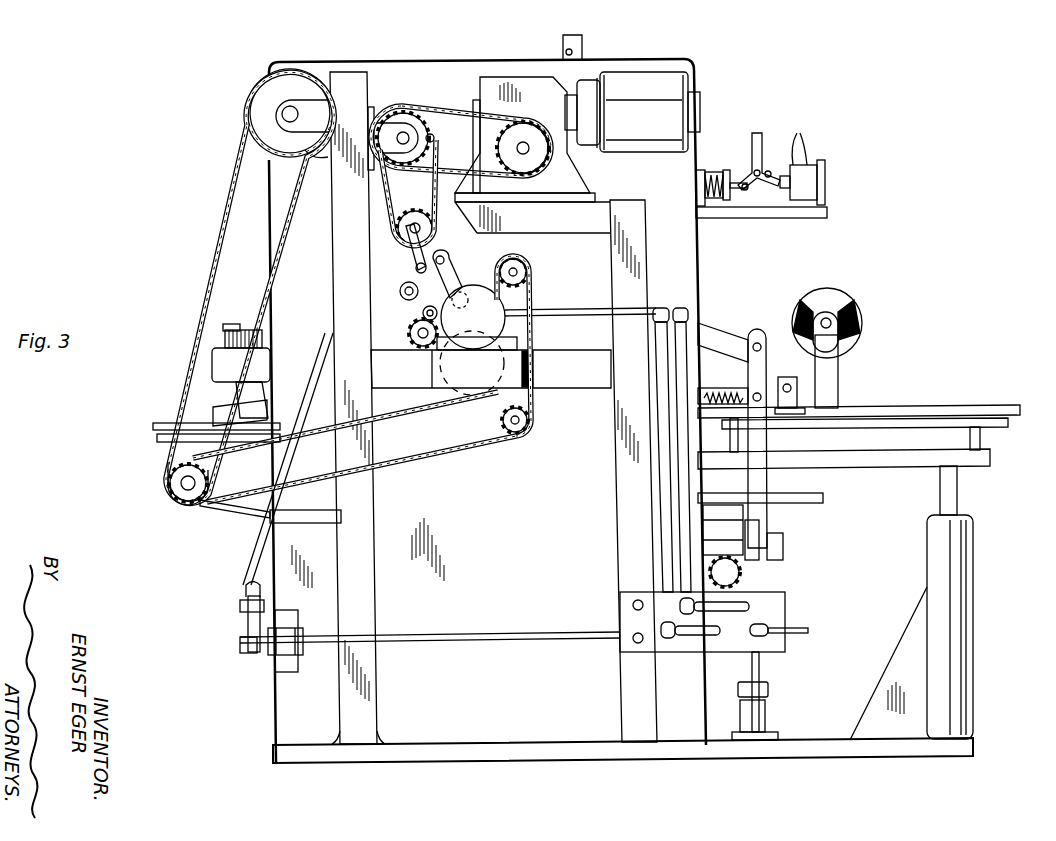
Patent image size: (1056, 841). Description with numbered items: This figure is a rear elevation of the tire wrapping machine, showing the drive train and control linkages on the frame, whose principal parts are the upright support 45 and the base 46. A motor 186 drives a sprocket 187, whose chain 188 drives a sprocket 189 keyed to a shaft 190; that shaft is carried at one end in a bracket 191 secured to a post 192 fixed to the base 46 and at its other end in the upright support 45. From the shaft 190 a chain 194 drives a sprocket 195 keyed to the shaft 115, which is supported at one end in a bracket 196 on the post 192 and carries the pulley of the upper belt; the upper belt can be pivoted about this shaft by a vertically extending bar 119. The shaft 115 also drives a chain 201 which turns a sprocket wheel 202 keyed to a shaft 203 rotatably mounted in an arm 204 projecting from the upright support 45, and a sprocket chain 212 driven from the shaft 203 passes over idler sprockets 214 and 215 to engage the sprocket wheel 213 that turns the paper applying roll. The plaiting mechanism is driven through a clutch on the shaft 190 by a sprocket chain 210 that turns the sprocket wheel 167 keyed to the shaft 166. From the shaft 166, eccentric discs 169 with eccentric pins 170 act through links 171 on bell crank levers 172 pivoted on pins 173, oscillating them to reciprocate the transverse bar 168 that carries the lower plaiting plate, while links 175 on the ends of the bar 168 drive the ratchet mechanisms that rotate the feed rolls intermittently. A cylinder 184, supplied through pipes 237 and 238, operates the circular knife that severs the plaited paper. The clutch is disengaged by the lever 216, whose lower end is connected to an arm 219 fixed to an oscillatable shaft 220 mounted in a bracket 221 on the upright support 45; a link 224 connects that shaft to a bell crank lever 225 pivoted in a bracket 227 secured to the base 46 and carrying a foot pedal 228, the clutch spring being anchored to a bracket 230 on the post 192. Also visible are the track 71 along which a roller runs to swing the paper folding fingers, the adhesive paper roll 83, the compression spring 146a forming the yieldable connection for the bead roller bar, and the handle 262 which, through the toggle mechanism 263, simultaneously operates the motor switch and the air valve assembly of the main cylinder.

The upright support 45 is at (485, 54).
The base 46 is at (368, 757).
The track 71 is at (993, 405).
The adhesive paper roll 83 is at (842, 306).
The shaft 115 is at (283, 118).
The vertically extending bar 119 is at (563, 45).
The compression spring 146a is at (724, 392).
The shaft 166 is at (457, 211).
The sprocket wheel 167 is at (395, 220).
The transverse bar 168 is at (477, 340).
The eccentric discs 169 is at (432, 251).
The eccentric pins 170 is at (405, 254).
The links 171 is at (405, 290).
The bell crank levers 172 is at (456, 276).
The pins 173 is at (450, 260).
The links 175 is at (418, 310).
The cylinder 184 is at (537, 331).
The motor 186 is at (632, 80).
The sprocket 187 is at (527, 132).
The chain 188 is at (448, 115).
The sprocket 189 is at (434, 138).
The shaft 190 is at (406, 126).
The bracket 191 is at (398, 103).
The post 192 is at (357, 72).
The chain 194 is at (250, 125).
The sprocket 195 is at (268, 93).
The bracket 196 is at (300, 168).
The chain 201 is at (230, 201).
The sprocket wheel 202 is at (165, 490).
The shaft 203 is at (184, 492).
The arm 204 is at (242, 506).
The sprocket chain 210 is at (437, 188).
The sprocket chain 212 is at (425, 461).
The sprocket wheel 213 is at (477, 398).
The idler sprocket 214 is at (525, 276).
The idler sprocket 215 is at (520, 440).
The lever 216 is at (323, 368).
The arm 219 is at (250, 621).
The oscillatable shaft 220 is at (262, 654).
The bracket 221 is at (289, 656).
The link 224 is at (743, 662).
The bell crank lever 225 is at (760, 676).
The bracket 227 is at (760, 728).
The foot pedal 228 is at (768, 688).
The bracket 230 is at (327, 513).
The pipe 237 is at (663, 500).
The pipe 238 is at (685, 545).
The handle 262 is at (763, 143).
The toggle mechanism 263 is at (752, 192).